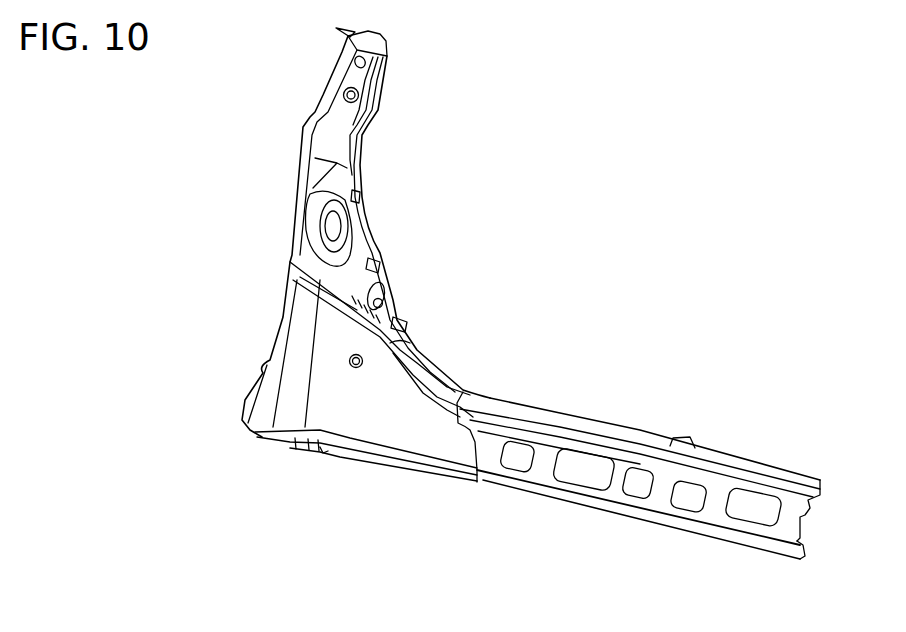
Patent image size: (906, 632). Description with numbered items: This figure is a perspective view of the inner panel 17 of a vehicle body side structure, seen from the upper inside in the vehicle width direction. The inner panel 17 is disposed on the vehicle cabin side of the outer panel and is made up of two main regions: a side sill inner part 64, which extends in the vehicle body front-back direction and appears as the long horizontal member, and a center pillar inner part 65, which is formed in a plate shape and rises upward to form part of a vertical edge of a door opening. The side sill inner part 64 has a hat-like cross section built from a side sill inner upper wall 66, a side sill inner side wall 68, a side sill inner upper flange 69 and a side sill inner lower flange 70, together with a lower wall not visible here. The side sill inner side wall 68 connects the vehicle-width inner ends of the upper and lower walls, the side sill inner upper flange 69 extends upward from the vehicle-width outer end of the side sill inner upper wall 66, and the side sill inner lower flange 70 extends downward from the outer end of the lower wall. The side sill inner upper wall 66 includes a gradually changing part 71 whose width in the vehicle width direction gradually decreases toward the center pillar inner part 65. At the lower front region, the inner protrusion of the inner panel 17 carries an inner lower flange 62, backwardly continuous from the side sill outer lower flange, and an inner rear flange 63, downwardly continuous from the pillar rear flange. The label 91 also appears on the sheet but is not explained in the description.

The inner panel 17 is at (296, 81).
The inner lower flange 62 is at (340, 451).
The inner rear flange 63 is at (266, 356).
The side sill inner part 64 is at (537, 403).
The center pillar inner part 65 is at (368, 207).
The side sill inner upper wall 66 is at (645, 455).
The side sill inner side wall 68 is at (670, 482).
The side sill inner upper flange 69 is at (600, 425).
The side sill inner lower flange 70 is at (640, 523).
The gradually changing part 71 is at (428, 372).
The reference 91 is at (544, 17).